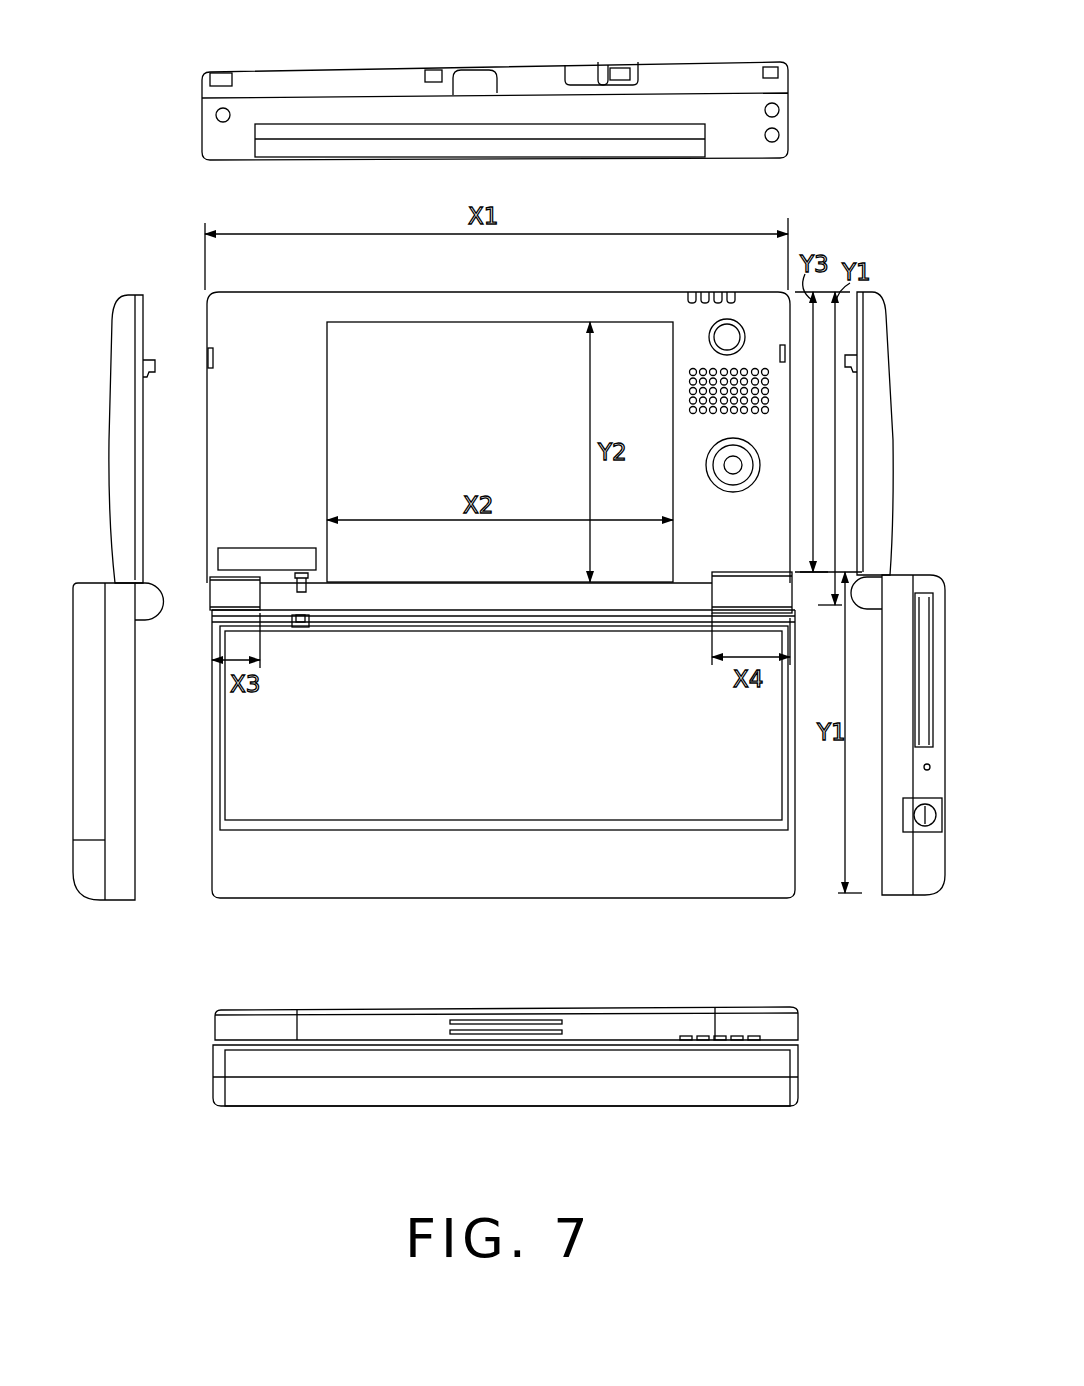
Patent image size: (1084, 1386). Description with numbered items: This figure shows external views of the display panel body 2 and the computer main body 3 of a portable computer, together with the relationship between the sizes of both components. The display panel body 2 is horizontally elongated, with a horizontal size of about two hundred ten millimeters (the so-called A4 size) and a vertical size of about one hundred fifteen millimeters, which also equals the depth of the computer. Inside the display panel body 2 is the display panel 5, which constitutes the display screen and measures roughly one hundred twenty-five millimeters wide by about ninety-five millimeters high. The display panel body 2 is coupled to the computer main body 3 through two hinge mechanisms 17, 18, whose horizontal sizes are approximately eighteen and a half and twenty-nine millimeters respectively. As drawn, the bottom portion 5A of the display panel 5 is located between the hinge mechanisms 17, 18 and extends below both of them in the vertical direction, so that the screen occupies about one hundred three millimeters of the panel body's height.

The display panel body 2 is at (788, 78).
The computer main body 3 is at (788, 118).
The display panel 5 is at (517, 320).
The bottom portion 5A is at (470, 585).
The hinge mechanism 17 is at (212, 598).
The hinge mechanism 18 is at (788, 587).